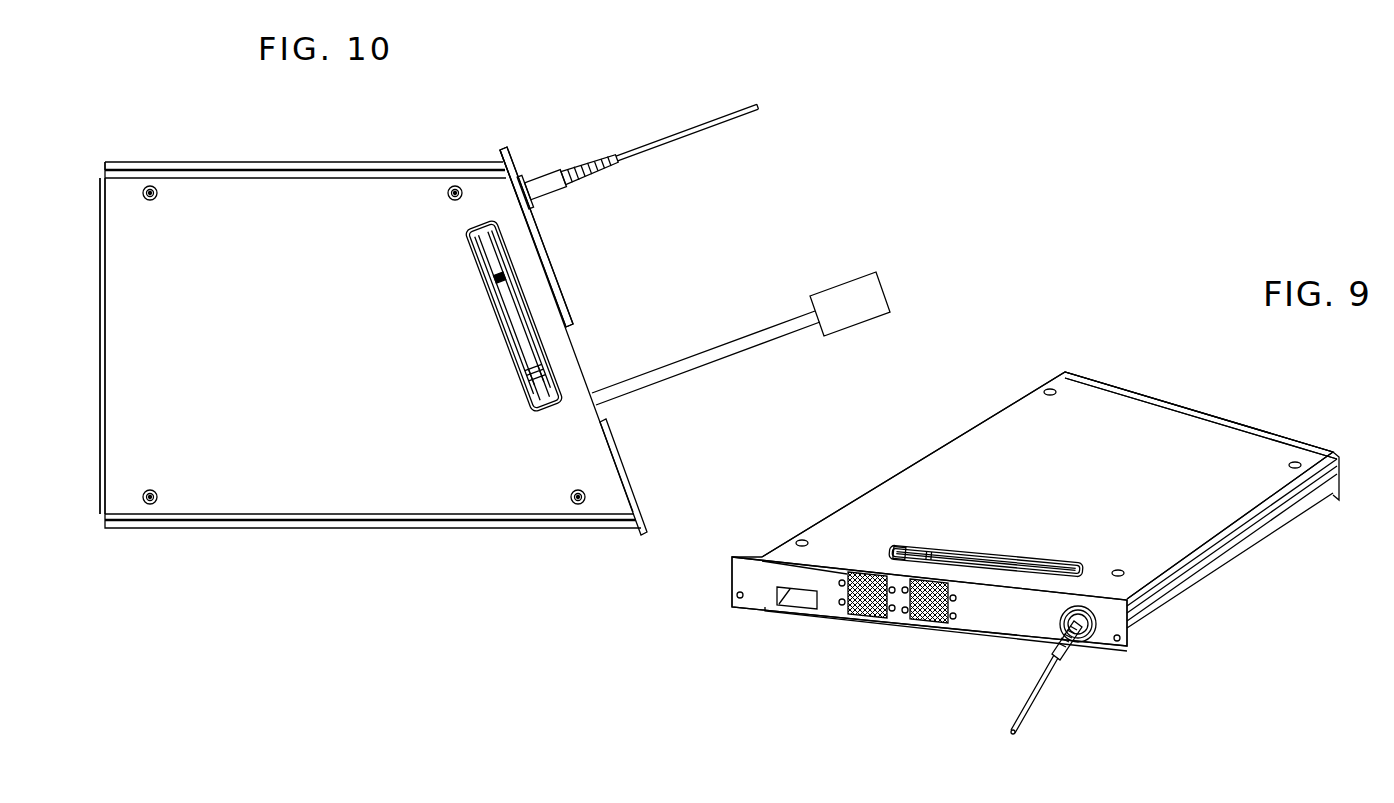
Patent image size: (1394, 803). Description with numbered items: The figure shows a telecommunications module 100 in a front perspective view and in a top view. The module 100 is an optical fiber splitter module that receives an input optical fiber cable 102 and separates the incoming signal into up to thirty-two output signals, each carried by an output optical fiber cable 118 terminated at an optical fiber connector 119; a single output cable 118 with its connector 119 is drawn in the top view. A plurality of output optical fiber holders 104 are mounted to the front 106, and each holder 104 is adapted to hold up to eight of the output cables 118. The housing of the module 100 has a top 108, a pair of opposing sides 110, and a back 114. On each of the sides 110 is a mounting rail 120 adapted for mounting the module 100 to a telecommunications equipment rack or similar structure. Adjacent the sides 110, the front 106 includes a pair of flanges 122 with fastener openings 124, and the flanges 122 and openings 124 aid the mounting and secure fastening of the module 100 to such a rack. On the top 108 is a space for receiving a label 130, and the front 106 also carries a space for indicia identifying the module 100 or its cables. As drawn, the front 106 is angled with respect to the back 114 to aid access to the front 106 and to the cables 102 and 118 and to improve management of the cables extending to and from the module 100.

In FIG. 10, the telecommunications module 100 is at (276, 542).
In FIG. 9, the telecommunications module 100 is at (1180, 388).
In FIG. 10, the input optical fiber cable 102 is at (733, 110).
In FIG. 9, the input optical fiber cable 102 is at (1035, 705).
In FIG. 9, the output optical fiber holder 104 is at (862, 573).
In FIG. 10, the front 106 is at (558, 282).
In FIG. 9, the front 106 is at (985, 627).
In FIG. 10, the top 108 is at (345, 380).
In FIG. 9, the top 108 is at (1090, 511).
In FIG. 10, the side 110 is at (330, 160).
In FIG. 9, the side 110 is at (888, 475).
In FIG. 10, the back 114 is at (99, 385).
In FIG. 9, the back 114 is at (1213, 413).
In FIG. 10, the output optical fiber cable 118 is at (742, 350).
In FIG. 10, the optical fiber connector 119 is at (838, 296).
In FIG. 10, the mounting rail 120 is at (235, 160).
In FIG. 9, the mounting rail 120 is at (1170, 580).
In FIG. 10, the flange 122 is at (502, 148).
In FIG. 9, the flange 122 is at (748, 567).
In FIG. 9, the fastener opening 124 is at (738, 598).
In FIG. 10, the label 130 is at (500, 322).